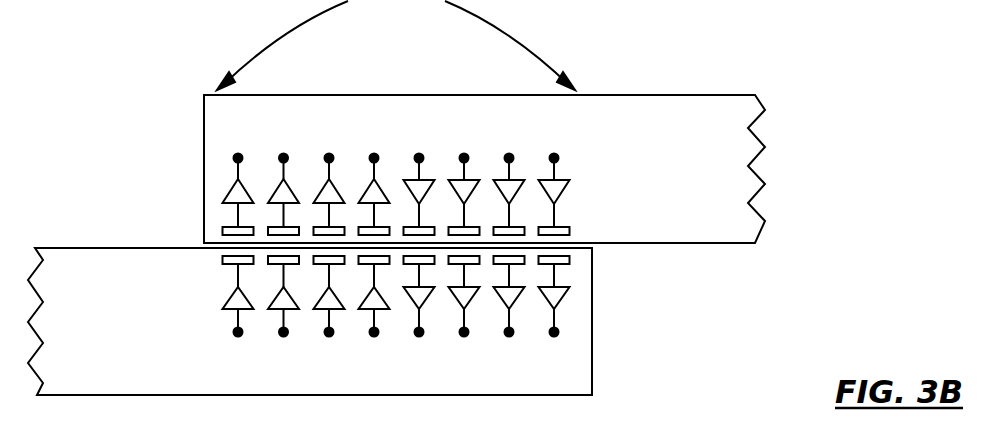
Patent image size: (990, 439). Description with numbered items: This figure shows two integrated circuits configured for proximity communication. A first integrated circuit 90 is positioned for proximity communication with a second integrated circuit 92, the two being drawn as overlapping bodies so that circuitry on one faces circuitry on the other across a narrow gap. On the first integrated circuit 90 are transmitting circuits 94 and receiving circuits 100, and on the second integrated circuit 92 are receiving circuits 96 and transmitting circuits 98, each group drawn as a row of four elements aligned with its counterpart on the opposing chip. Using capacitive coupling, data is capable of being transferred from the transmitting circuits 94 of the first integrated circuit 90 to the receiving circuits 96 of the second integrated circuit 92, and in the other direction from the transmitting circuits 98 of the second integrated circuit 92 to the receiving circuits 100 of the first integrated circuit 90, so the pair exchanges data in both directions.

The first integrated circuit 90 is at (108, 340).
The second integrated circuit 92 is at (690, 182).
The transmitting circuits 94 is at (240, 342).
The receiving circuits 96 is at (240, 144).
The transmitting circuits 98 is at (419, 144).
The receiving circuits 100 is at (419, 342).